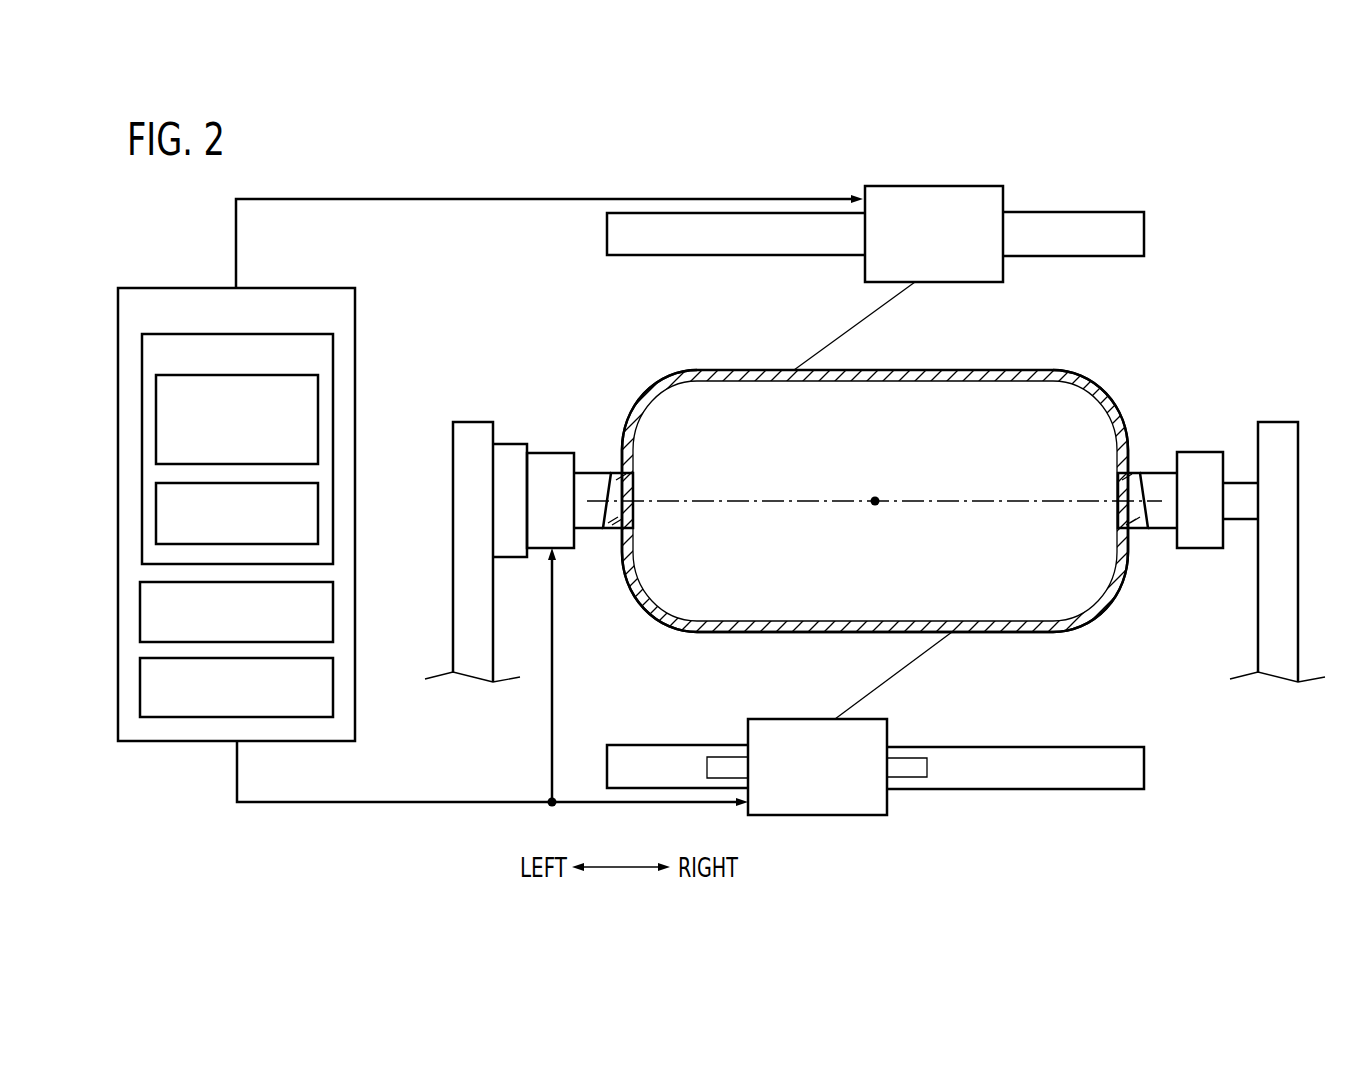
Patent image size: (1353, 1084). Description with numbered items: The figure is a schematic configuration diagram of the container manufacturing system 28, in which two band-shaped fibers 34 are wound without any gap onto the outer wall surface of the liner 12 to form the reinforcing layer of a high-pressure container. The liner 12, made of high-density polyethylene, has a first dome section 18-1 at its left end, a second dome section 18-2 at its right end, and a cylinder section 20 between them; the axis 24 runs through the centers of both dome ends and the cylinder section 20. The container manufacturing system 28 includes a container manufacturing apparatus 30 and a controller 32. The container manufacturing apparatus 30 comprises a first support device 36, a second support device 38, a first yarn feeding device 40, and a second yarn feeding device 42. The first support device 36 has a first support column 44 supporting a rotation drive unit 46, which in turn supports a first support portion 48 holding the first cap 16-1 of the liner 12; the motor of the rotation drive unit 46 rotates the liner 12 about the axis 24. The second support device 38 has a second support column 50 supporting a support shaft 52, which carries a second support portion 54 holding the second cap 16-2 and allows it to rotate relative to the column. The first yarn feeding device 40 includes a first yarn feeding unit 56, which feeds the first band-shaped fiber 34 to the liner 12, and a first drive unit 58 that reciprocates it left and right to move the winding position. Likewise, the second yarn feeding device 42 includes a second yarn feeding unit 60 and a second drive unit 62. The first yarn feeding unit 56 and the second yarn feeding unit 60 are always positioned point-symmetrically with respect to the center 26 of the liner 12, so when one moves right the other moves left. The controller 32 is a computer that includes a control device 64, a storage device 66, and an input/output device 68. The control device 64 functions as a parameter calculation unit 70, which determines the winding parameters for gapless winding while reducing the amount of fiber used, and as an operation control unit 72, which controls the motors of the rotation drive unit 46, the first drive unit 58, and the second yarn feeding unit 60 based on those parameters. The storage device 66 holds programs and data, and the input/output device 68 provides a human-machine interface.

The liner 12 is at (1090, 380).
The first cap 16-1 is at (620, 478).
The second cap 16-2 is at (1130, 473).
The first dome section 18-1 is at (637, 600).
The second dome section 18-2 is at (1110, 598).
The cylinder section 20 is at (1011, 633).
The axis 24 is at (793, 497).
The center 26 is at (877, 498).
The container manufacturing system 28 is at (643, 146).
The container manufacturing apparatus 30 is at (1254, 307).
The controller 32 is at (286, 288).
The band-shaped fiber 34 is at (895, 298).
The first support device 36 is at (514, 380).
The second support device 38 is at (1227, 392).
The first yarn feeding device 40 is at (1099, 206).
The second yarn feeding device 42 is at (942, 796).
The first support column 44 is at (470, 430).
The rotation drive unit 46 is at (510, 548).
The first support portion 48 is at (555, 453).
The second support column 50 is at (1278, 428).
The support shaft 52 is at (1241, 520).
The second support portion 54 is at (1203, 452).
The first yarn feeding unit 56 is at (997, 197).
The first drive unit 58 is at (777, 256).
The second yarn feeding unit 60 is at (755, 730).
The second drive unit 62 is at (948, 747).
The control device 64 is at (142, 400).
The storage device 66 is at (140, 610).
The input/output device 68 is at (140, 686).
The parameter calculation unit 70 is at (318, 403).
The operation control unit 72 is at (318, 512).